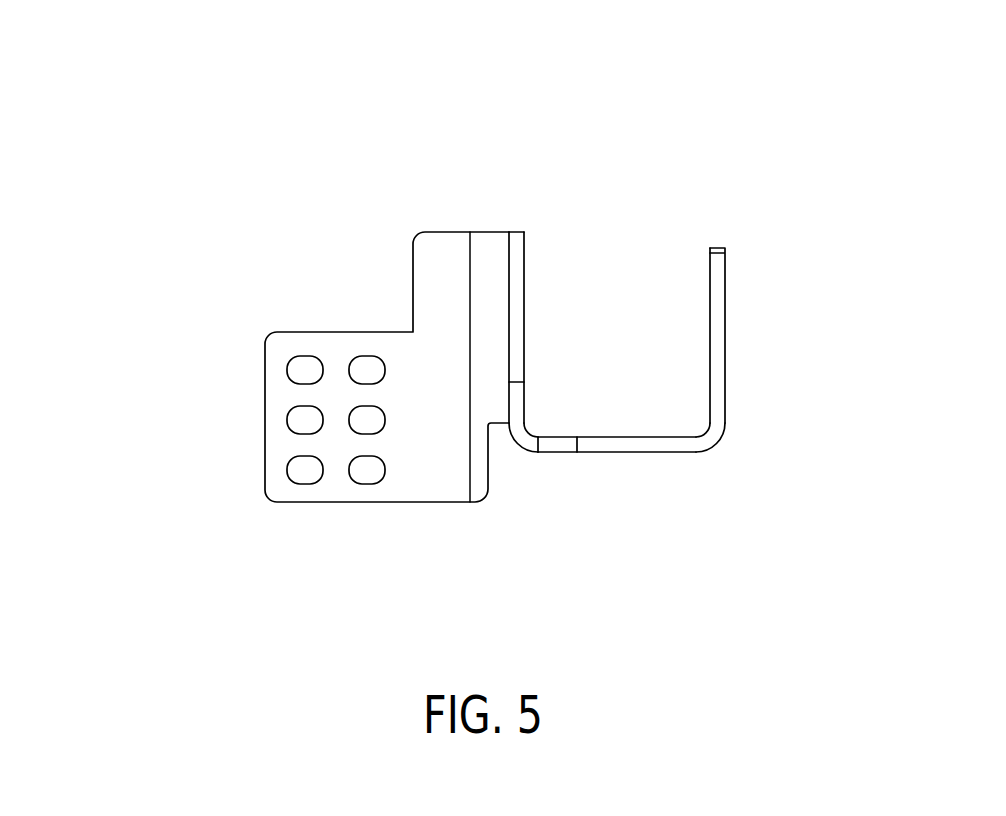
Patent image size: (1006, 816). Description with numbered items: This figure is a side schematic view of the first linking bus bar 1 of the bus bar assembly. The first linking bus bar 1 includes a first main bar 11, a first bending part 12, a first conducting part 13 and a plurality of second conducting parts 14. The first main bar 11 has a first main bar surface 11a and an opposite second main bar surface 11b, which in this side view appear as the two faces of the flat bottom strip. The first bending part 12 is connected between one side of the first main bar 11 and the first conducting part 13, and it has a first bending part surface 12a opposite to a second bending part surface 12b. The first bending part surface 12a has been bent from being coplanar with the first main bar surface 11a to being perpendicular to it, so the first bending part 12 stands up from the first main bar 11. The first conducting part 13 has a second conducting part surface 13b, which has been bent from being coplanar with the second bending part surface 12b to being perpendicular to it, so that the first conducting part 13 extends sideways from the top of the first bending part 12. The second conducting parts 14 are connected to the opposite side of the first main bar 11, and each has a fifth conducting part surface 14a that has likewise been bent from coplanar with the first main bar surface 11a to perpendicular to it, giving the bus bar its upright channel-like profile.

The first linking bus bar 1 is at (985, 72).
The first main bar 11 is at (631, 462).
The first main bar surface 11a is at (617, 437).
The second main bar surface 11b is at (605, 478).
The first bending part 12 is at (547, 298).
The first bending part surface 12a is at (528, 273).
The second bending part surface 12b is at (507, 286).
The first conducting part 13 is at (339, 367).
The second conducting part surface 13b is at (330, 358).
The second conducting parts 14 is at (760, 309).
The fifth conducting part surface 14a is at (708, 283).